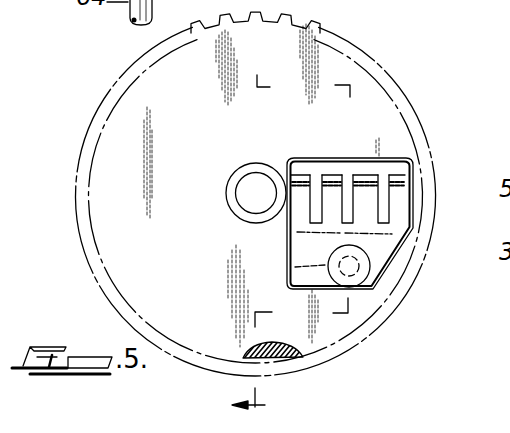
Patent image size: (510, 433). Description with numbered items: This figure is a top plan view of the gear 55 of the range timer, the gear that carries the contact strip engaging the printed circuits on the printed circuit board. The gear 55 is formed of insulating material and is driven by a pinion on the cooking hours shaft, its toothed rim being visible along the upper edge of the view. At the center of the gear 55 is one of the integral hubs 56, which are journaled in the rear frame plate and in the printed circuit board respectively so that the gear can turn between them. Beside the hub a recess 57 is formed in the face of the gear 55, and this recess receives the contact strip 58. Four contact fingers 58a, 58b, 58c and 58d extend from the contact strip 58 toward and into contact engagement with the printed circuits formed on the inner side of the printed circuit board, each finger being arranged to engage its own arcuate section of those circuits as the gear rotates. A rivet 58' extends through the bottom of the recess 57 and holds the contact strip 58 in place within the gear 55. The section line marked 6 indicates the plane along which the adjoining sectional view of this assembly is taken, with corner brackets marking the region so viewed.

The gear 55 is at (330, 53).
The integral hub 56 is at (238, 192).
The recess 57 is at (405, 168).
The contact strip 58 is at (313, 250).
The contact finger 58a is at (298, 175).
The contact finger 58b is at (328, 175).
The contact finger 58c is at (363, 175).
The contact finger 58d is at (398, 175).
The rivet 58' is at (401, 266).
The section line 6-6 indicator 6 is at (257, 405).